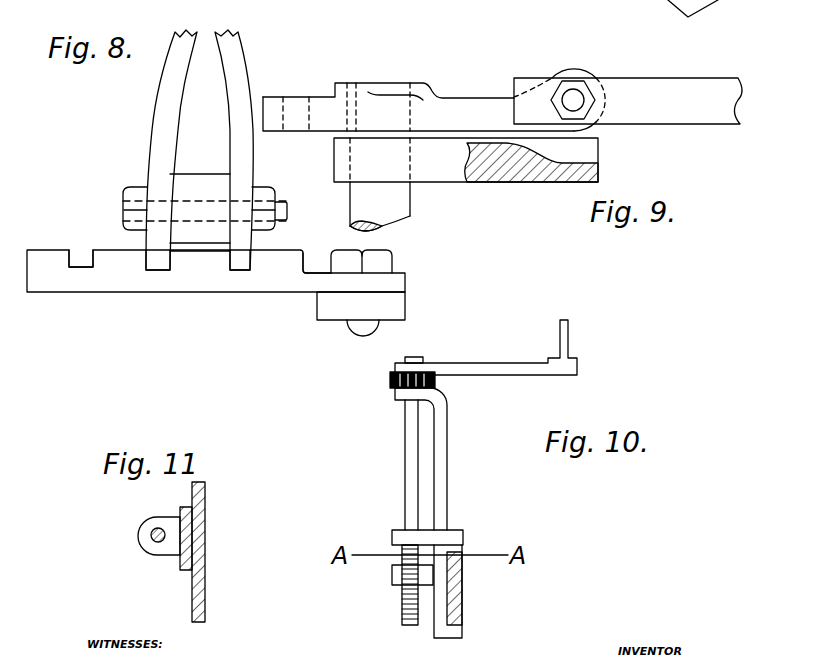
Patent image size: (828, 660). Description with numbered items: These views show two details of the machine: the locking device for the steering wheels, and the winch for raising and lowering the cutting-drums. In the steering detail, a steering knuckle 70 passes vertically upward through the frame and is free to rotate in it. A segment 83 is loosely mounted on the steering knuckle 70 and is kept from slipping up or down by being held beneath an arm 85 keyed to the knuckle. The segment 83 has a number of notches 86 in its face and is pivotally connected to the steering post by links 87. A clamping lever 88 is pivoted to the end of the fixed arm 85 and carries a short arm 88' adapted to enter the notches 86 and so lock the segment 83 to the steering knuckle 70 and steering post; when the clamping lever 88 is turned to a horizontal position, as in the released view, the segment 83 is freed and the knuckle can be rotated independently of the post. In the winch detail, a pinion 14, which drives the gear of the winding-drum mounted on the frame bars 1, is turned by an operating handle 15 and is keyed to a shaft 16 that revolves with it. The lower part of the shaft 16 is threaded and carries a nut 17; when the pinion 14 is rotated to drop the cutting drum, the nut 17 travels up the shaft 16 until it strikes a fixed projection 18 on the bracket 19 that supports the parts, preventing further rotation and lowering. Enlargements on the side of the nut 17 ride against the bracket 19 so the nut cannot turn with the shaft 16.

In FIG. 10, the bars 1 is at (465, 593).
In FIG. 11, the bars 1 is at (205, 558).
In FIG. 10, the pinion 14 is at (390, 378).
In FIG. 10, the operating handle 15 is at (502, 362).
In FIG. 10, the shaft 16 is at (405, 472).
In FIG. 11, the shaft 16 is at (151, 542).
In FIG. 10, the nut 17 is at (397, 578).
In FIG. 11, the nut 17 is at (162, 548).
In FIG. 10, the fixed projection 18 is at (392, 536).
In FIG. 10, the bracket 19 is at (448, 477).
In FIG. 11, the bracket 19 is at (190, 528).
In FIG. 9, the steering knuckle 70 is at (402, 212).
In FIG. 8, the segment 83 is at (117, 278).
In FIG. 9, the segment 83 is at (441, 172).
In FIG. 9, the arm 85 is at (450, 107).
In FIG. 8, the notches 86 is at (81, 260).
In FIG. 9, the notches 86 is at (588, 152).
In FIG. 8, the links 87 is at (323, 308).
In FIG. 8, the clamping lever 88 is at (221, 150).
In FIG. 9, the clamping lever 88 is at (629, 121).
In FIG. 8, the short arm 88' is at (198, 299).
In FIG. 9, the short arm 88' is at (559, 67).